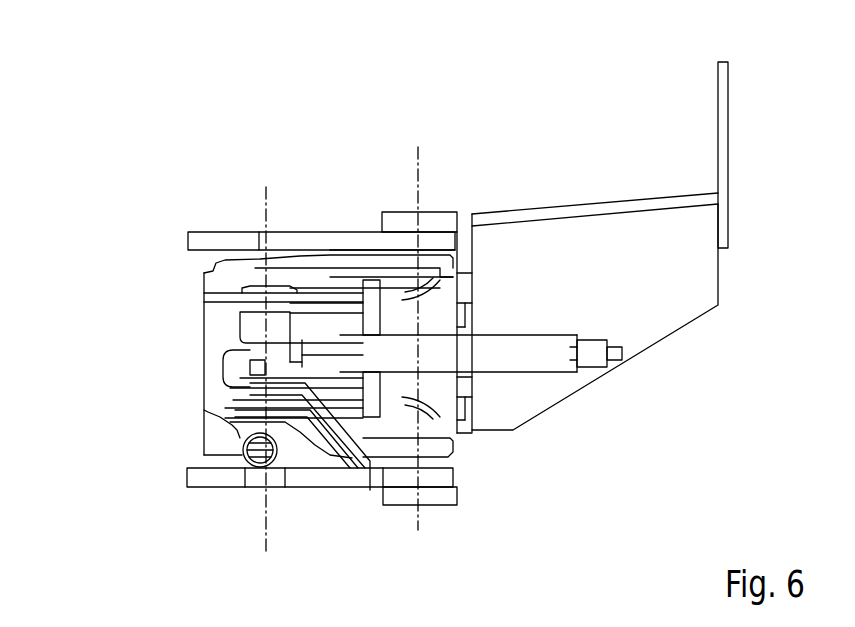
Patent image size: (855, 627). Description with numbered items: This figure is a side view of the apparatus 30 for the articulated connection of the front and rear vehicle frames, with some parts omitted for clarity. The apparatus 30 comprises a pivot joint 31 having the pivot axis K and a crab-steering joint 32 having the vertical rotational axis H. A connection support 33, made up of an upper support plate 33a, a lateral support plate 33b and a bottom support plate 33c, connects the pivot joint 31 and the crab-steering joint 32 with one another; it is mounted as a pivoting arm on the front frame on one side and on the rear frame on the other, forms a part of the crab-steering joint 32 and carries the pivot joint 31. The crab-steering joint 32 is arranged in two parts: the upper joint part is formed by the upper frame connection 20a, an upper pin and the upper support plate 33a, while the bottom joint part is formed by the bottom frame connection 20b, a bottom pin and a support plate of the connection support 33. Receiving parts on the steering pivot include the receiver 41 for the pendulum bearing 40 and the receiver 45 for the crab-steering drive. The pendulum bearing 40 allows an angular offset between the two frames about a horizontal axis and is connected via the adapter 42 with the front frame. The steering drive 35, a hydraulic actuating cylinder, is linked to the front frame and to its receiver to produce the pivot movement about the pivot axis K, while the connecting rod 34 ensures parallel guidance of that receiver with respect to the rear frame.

The apparatus 30 is at (165, 197).
The upper frame connection 20a is at (220, 240).
The bottom frame connection 20b is at (195, 479).
The pivot axis K is at (268, 185).
The pivot joint 31 is at (302, 207).
The receiver for the pendulum bearing 41 is at (338, 308).
The vertical rotational axis H is at (420, 170).
The crab-steering joint 32 is at (453, 197).
The adapter 42 is at (682, 230).
The connection support 33 is at (178, 452).
The upper support plate 33a is at (227, 280).
The lateral support plate 33b is at (207, 306).
The bottom support plate 33c is at (204, 410).
The receiver for the crab-steering drive 45 is at (250, 472).
The connecting rod 34 is at (367, 485).
The steering drive 35 is at (552, 357).
The pendulum bearing 40 is at (438, 407).